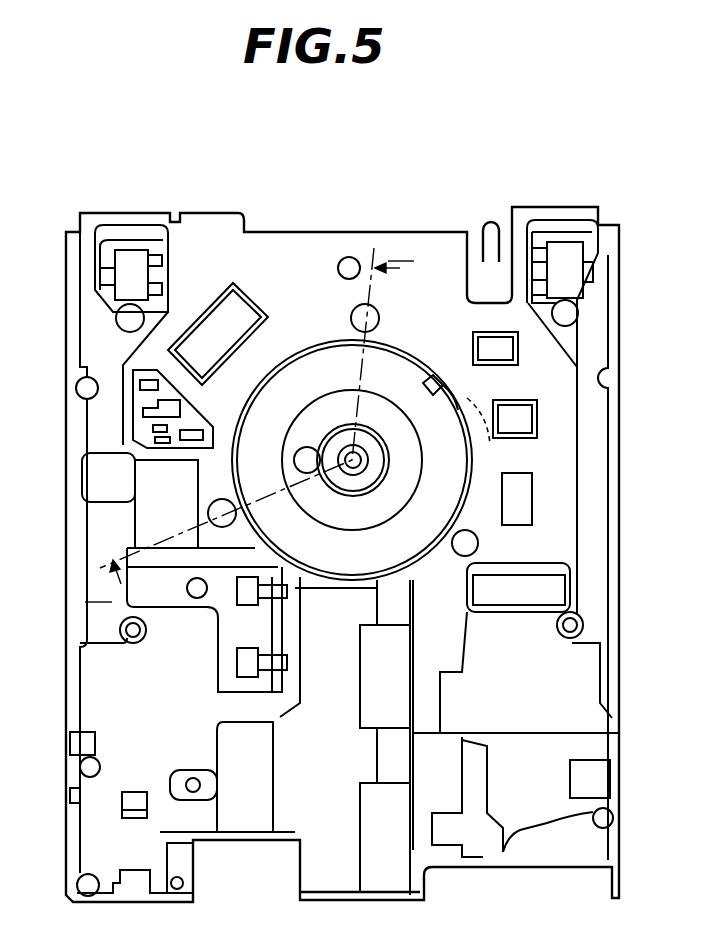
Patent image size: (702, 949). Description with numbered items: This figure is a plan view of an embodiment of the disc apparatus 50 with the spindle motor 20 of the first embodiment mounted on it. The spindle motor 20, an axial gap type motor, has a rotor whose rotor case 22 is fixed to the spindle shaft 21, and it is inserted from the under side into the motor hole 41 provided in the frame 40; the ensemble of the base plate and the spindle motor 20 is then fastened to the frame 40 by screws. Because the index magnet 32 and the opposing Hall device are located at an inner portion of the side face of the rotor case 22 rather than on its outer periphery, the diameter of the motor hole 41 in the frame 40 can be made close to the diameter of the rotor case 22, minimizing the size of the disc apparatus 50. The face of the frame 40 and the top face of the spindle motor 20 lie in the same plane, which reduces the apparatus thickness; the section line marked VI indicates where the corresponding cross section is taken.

The disc apparatus 50 is at (383, 125).
The frame 40 is at (435, 238).
The spindle motor 20 is at (314, 355).
The spindle shaft 21 is at (370, 472).
The rotor case 22 is at (395, 367).
The motor hole 41 is at (467, 388).
The index magnet 32 is at (526, 436).